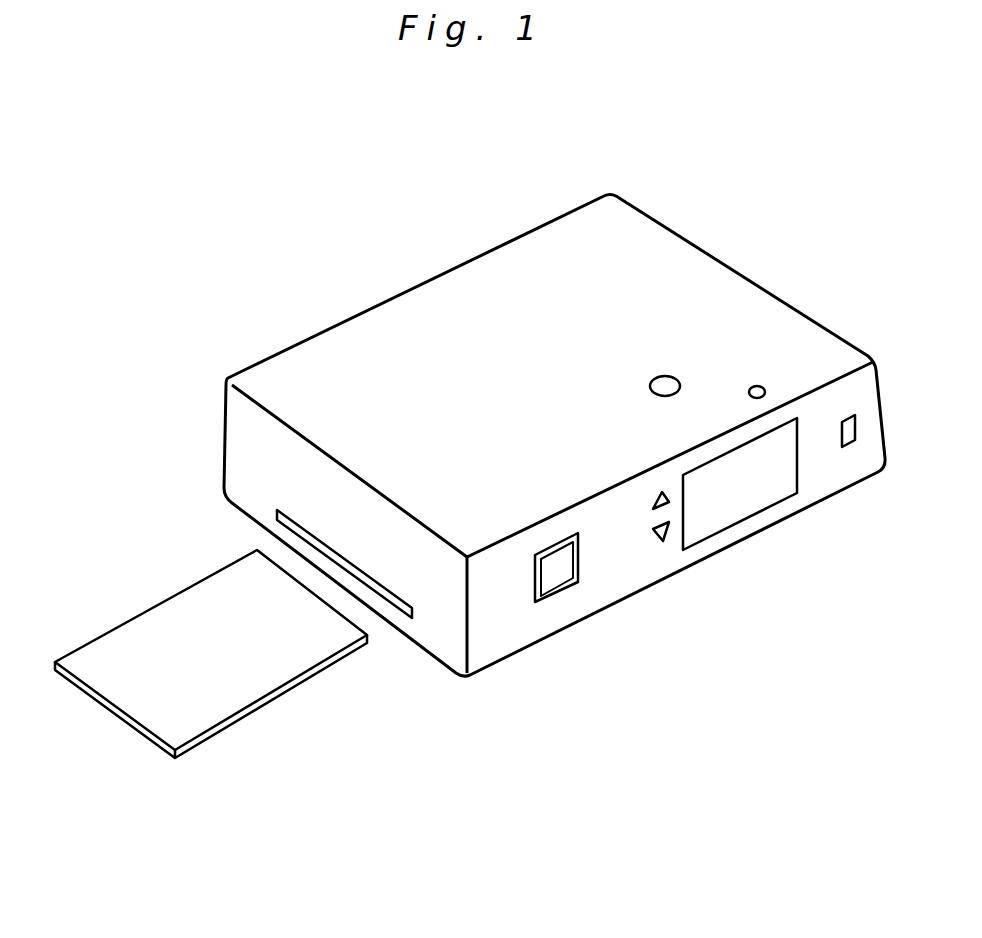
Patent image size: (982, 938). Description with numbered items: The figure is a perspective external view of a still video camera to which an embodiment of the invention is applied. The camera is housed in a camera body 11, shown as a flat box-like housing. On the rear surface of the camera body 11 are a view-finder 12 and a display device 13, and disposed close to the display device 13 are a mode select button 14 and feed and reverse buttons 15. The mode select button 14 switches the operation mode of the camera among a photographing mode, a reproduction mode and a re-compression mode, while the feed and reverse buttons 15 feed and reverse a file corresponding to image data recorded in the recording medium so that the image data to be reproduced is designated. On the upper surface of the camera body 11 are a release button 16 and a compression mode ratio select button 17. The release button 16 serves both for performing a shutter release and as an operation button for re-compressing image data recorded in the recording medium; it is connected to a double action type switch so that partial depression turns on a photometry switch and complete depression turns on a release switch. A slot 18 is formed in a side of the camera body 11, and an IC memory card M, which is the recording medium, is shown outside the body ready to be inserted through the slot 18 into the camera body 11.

The camera body 11 is at (338, 322).
The view-finder 12 is at (558, 582).
The display device 13 is at (749, 508).
The mode select button 14 is at (848, 447).
The feed and reverse buttons 15 is at (655, 507).
The release button 16 is at (665, 385).
The compression mode ratio select button 17 is at (757, 386).
The slot 18 is at (407, 620).
The IC memory card M is at (223, 708).